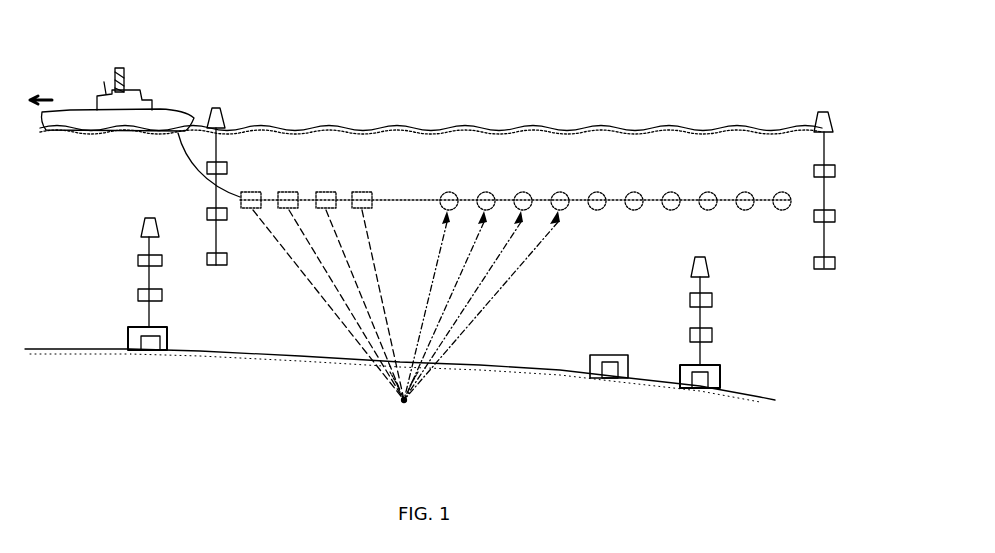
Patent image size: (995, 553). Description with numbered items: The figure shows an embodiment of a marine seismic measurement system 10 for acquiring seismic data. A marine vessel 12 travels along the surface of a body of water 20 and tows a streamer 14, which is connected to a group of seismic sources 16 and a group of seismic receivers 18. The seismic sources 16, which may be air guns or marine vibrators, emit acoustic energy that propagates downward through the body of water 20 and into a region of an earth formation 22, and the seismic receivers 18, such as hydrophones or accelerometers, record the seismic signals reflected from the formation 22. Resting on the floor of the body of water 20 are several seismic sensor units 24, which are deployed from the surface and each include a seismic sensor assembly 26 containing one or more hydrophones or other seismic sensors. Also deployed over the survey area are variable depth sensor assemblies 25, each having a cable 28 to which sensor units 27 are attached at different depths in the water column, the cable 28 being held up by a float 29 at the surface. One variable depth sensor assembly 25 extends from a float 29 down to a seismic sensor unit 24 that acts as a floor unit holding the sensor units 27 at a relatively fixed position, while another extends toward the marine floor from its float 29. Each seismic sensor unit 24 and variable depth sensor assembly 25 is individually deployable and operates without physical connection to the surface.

The marine seismic measurement system 10 is at (593, 26).
The marine vessel 12 is at (170, 125).
The streamer 14 is at (403, 198).
The seismic source 16 is at (368, 184).
The seismic receiver 18 is at (790, 190).
The body of water 20 is at (73, 225).
The earth formation 22 is at (400, 390).
The seismic sensor unit 24 is at (128, 338).
The variable depth sensor assembly 25 is at (194, 197).
The seismic sensor assembly 26 is at (155, 341).
The sensor unit 27 is at (162, 258).
The cable 28 is at (700, 318).
The float 29 is at (693, 268).